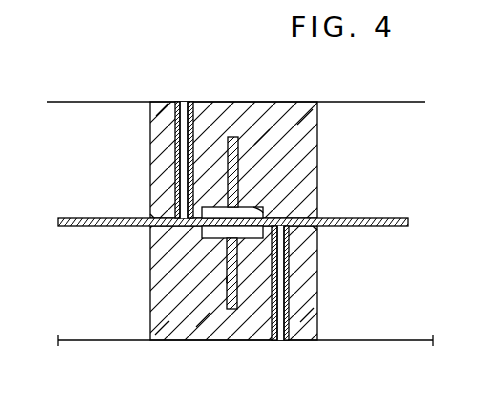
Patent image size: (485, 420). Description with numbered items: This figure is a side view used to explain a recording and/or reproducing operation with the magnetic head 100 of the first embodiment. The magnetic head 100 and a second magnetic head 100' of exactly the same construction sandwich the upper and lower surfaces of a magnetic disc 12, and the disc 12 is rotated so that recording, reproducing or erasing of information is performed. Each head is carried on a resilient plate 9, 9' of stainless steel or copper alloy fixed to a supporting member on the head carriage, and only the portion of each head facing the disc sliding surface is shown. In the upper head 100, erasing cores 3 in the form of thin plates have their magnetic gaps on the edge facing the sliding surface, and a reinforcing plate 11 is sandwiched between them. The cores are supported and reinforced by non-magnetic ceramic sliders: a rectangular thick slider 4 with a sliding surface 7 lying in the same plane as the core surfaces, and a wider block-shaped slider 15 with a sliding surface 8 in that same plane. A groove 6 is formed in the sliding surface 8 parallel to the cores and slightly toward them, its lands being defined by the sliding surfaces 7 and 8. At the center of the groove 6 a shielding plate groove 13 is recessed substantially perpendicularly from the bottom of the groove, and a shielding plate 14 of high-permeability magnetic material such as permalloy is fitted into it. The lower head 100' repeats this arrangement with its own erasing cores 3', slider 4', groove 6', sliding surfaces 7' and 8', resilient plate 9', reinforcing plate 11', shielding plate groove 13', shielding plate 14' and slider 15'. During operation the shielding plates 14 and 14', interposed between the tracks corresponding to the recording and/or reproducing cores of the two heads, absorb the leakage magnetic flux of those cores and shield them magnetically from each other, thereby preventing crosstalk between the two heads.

The erasing core 3 is at (169, 136).
The slider 4 is at (142, 93).
The groove 6 is at (305, 187).
The sliding surface 7 is at (131, 197).
The sliding surface 8 is at (280, 202).
The resilient plate 9 is at (236, 85).
The reinforcing plate 11 is at (188, 138).
The magnetic disc 12 is at (73, 226).
The shielding plate groove 13 is at (269, 103).
The shielding plate 14 is at (228, 132).
The slider 15 is at (311, 93).
The magnetic head 100 is at (279, 160).
The lower tubular sleeve 3' is at (289, 304).
The lower body portion 4' is at (332, 347).
The lower adhesive layer 6' is at (159, 288).
The lower gap 7' is at (345, 242).
The lower head member 8' is at (178, 247).
The lower surface line 9' is at (245, 322).
The lower bore 11' is at (260, 303).
The lower filler portion 13' is at (186, 347).
The shielding plate 14' is at (220, 309).
The lower housing portion 15' is at (148, 351).
The magnetic head 100' is at (275, 283).